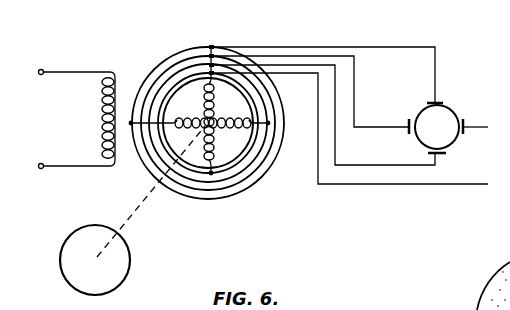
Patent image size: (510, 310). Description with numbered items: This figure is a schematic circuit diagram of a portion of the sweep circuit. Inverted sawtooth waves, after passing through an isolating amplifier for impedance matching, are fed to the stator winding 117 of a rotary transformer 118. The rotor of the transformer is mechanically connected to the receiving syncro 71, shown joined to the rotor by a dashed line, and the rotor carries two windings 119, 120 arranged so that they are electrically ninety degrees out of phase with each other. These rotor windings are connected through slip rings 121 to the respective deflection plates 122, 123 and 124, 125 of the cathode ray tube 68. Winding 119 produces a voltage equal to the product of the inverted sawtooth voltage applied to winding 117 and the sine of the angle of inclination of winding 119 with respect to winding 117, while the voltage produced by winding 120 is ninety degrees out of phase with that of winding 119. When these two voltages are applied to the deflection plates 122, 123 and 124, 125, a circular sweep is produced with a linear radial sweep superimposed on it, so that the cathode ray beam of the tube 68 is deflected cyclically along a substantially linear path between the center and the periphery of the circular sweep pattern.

The stator winding 117 is at (102, 108).
The rotary transformer 118 is at (240, 42).
The rotor winding 119 is at (216, 98).
The rotor winding 120 is at (217, 133).
The slip rings 121 is at (228, 202).
The receiving syncro 71 is at (124, 262).
The cathode ray tube 68 is at (416, 141).
The deflection plate 122 is at (408, 120).
The deflection plate 123 is at (466, 127).
The deflection plate 124 is at (436, 102).
The deflection plate 125 is at (438, 156).